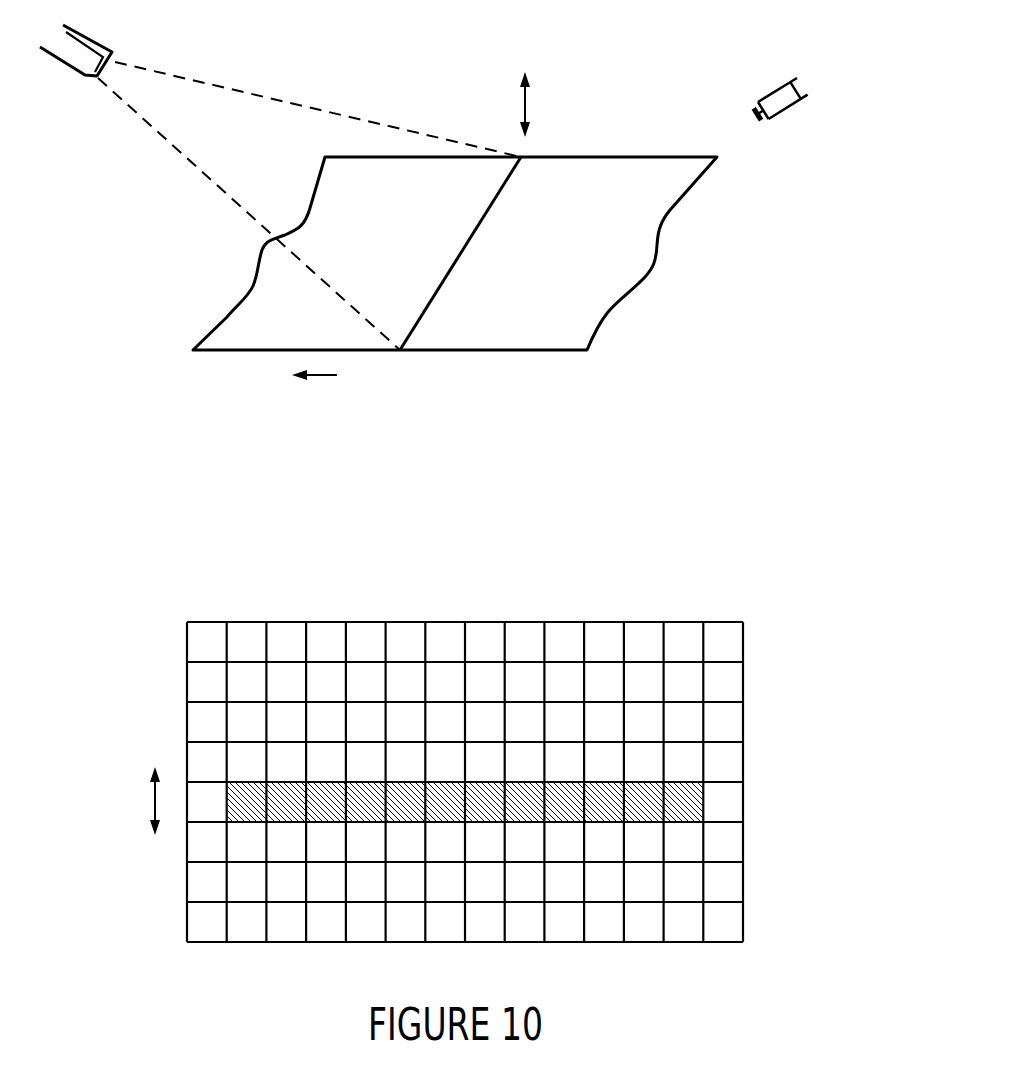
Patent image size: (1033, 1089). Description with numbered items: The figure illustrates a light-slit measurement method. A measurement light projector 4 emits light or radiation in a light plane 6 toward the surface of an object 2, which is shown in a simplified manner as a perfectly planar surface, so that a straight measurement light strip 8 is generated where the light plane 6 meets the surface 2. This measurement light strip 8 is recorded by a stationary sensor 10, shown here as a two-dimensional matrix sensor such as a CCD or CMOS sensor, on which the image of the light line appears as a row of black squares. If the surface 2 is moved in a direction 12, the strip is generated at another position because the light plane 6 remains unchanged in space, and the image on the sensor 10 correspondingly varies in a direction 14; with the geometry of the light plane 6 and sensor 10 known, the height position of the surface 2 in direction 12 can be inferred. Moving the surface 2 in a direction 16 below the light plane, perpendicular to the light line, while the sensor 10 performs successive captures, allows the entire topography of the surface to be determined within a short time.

The surface of the object 2 is at (548, 345).
The measurement light projector 4 is at (73, 63).
The light plane 6 is at (288, 113).
The measurement light strip 8 is at (518, 166).
The sensor 10 is at (796, 82).
The direction 12 is at (525, 72).
The direction 14 is at (152, 803).
The direction 16 is at (333, 377).